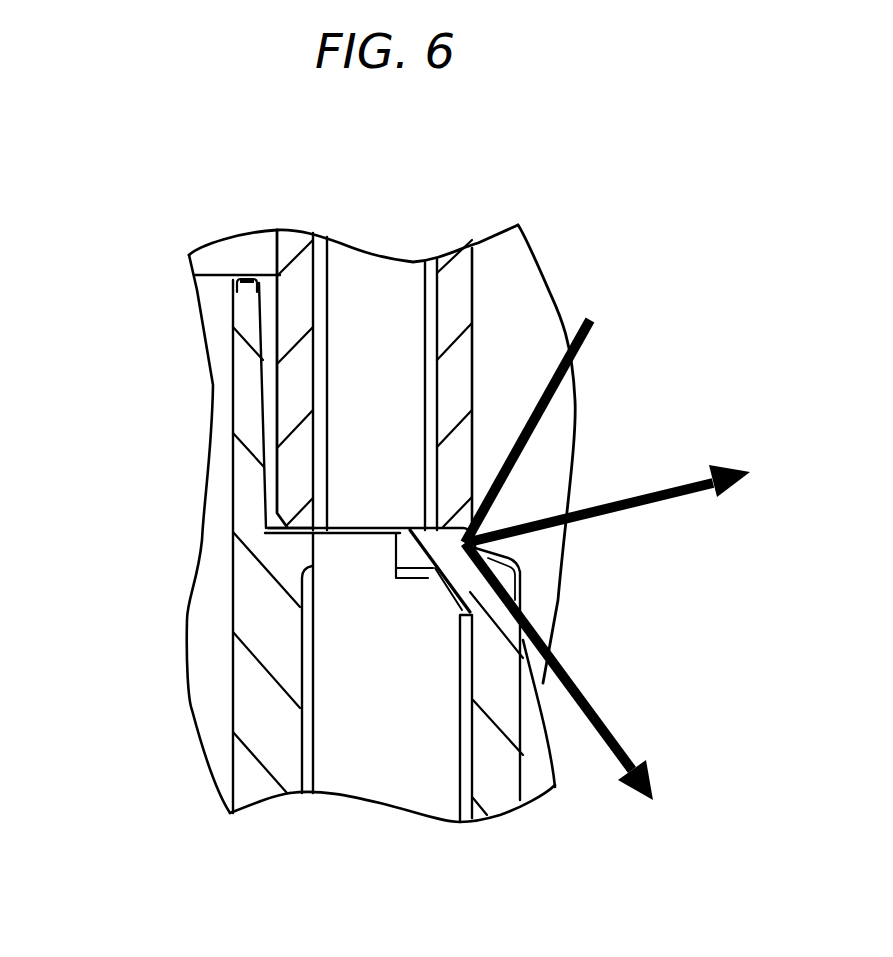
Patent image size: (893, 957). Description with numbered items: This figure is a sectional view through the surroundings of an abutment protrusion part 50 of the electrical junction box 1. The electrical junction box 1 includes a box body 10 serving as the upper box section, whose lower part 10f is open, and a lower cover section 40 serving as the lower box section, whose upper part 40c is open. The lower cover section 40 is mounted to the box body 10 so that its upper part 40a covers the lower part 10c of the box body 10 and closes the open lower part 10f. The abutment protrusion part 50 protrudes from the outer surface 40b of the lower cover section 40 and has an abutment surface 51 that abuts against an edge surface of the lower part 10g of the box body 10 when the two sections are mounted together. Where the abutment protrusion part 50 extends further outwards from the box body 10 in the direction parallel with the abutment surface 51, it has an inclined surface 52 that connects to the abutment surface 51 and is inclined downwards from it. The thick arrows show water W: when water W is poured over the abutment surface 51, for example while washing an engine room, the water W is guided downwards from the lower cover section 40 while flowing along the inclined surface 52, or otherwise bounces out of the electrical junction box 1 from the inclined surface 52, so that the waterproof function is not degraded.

The electrical junction box 1 is at (390, 218).
The box body 10 is at (371, 433).
The lower part of the box body 10c is at (472, 467).
The lower part of the box body 10f is at (272, 502).
The lower part of the box body 10g is at (397, 568).
The lower cover section 40 is at (191, 506).
The upper part of the lower cover section 40a is at (240, 447).
The outer surface of the lower cover section 40b is at (270, 407).
The upper part of the lower cover section 40c is at (227, 295).
The abutment protrusion part 50 is at (454, 737).
The abutment surface 51 is at (417, 527).
The inclined surface 52 is at (462, 610).
The water W is at (598, 505).